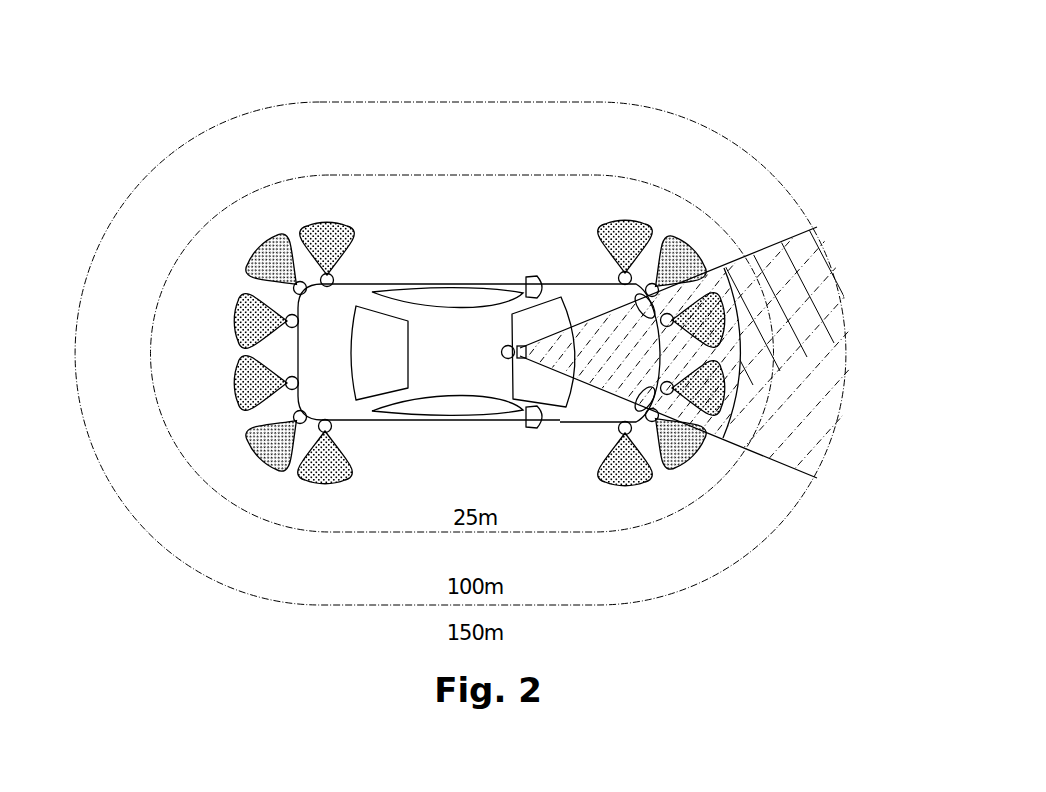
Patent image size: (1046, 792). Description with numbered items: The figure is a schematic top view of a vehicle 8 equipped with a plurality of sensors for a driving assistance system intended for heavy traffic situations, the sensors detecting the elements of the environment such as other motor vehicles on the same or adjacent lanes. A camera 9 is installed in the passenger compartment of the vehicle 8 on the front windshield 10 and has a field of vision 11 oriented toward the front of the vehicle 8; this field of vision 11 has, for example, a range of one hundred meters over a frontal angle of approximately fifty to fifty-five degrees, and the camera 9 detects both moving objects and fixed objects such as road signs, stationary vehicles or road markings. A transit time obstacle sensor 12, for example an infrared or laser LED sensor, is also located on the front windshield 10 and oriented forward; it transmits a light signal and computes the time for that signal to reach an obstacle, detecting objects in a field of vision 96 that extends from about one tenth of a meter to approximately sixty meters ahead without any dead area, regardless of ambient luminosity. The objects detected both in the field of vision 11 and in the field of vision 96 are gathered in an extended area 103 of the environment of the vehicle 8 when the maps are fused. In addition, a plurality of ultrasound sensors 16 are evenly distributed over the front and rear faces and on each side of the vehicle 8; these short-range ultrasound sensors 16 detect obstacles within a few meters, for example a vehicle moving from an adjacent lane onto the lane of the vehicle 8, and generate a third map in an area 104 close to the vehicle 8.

The vehicle 8 is at (432, 268).
The camera 9 is at (501, 336).
The front windshield 10 is at (533, 415).
The field of vision 11 is at (815, 318).
The obstacle sensor 12 is at (553, 395).
The ultrasound sensors 16 is at (298, 283).
The field of vision 96 is at (604, 330).
The extended area 103 is at (707, 255).
The area close to the vehicle 104 is at (245, 327).